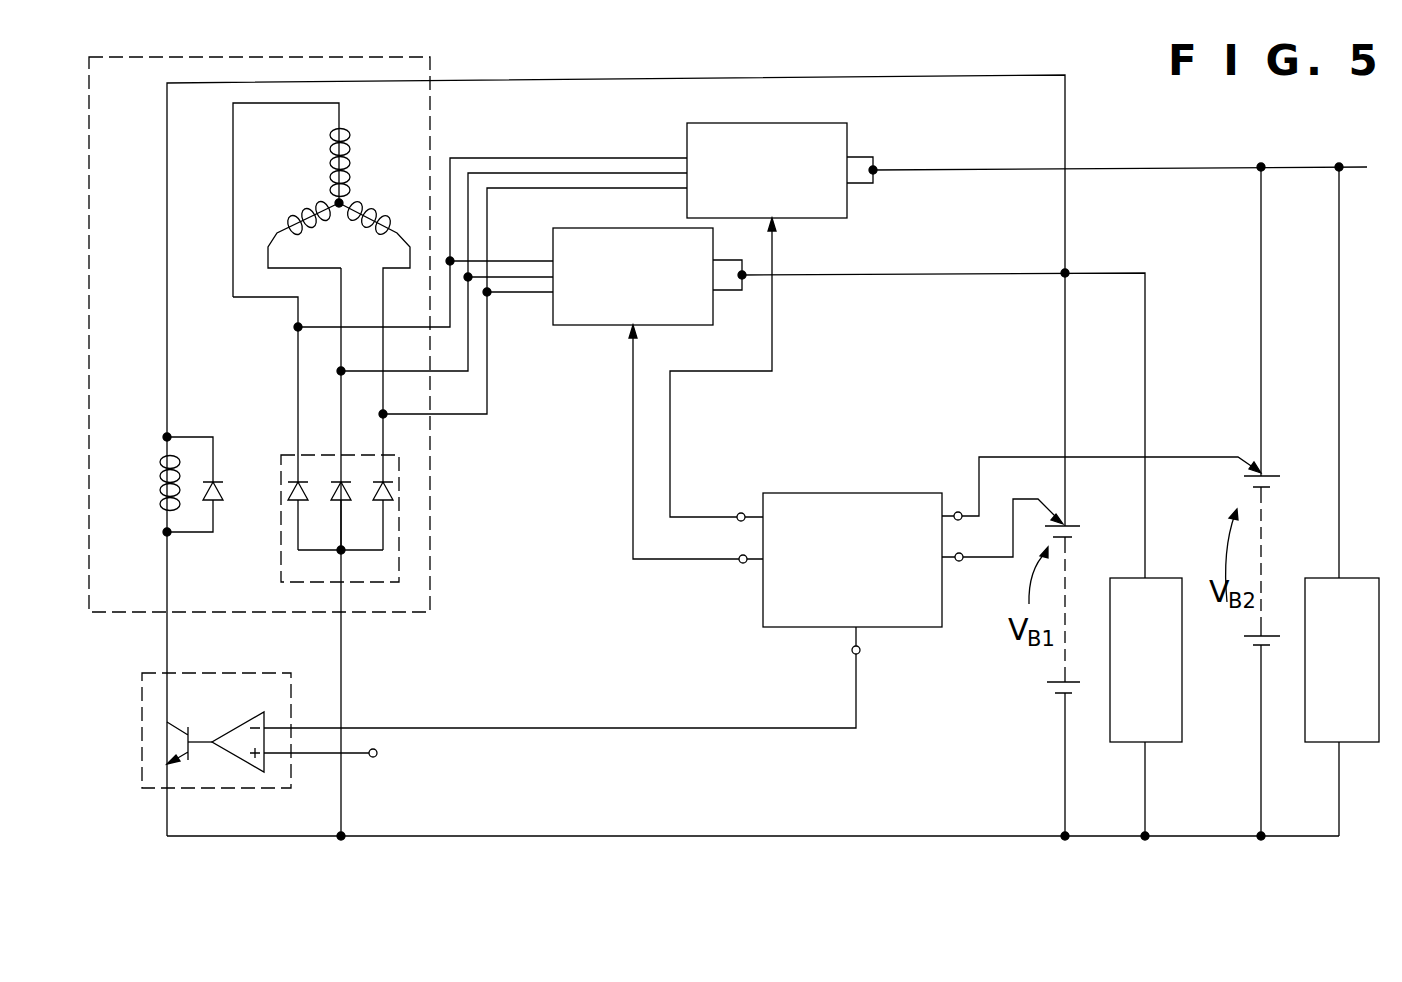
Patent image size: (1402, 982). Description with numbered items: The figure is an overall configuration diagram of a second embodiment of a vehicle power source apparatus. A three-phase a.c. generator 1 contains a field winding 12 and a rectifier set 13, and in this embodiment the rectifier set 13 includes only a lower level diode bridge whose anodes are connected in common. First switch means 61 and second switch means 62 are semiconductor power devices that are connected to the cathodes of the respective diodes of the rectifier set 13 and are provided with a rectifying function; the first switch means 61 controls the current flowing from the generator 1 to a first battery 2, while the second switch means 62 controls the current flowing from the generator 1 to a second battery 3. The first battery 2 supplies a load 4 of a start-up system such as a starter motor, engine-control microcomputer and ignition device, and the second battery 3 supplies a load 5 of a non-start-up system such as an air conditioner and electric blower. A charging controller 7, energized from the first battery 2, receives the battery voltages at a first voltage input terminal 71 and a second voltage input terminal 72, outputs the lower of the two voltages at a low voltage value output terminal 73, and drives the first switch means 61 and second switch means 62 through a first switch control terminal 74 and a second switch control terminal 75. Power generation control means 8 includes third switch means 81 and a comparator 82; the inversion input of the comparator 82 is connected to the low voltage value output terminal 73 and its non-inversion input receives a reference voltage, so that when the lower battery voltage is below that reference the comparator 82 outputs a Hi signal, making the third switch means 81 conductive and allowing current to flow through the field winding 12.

The three-phase a.c. generator 1 is at (432, 62).
The field winding 12 is at (345, 197).
The rectifier set 13 is at (281, 455).
The first switch means 61 is at (575, 228).
The second switch means 62 is at (750, 122).
The charging controller 7 is at (827, 493).
The first voltage input terminal 71 is at (959, 561).
The second voltage input terminal 72 is at (958, 512).
The low voltage value output terminal 73 is at (860, 654).
The first switch control terminal 74 is at (743, 563).
The second switch control terminal 75 is at (738, 513).
The first battery 2 is at (1068, 521).
The second battery 3 is at (1265, 470).
The load of a start-up system 4 is at (1160, 576).
The load of a non-start-up system 5 is at (1360, 576).
The power generation control means 8 is at (257, 776).
The third switch means 81 is at (178, 742).
The comparator 82 is at (228, 748).